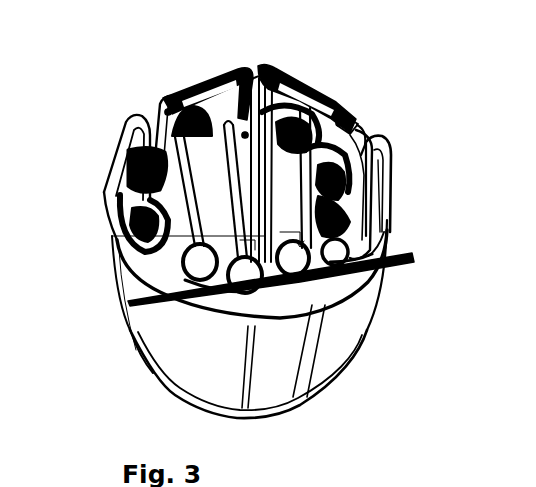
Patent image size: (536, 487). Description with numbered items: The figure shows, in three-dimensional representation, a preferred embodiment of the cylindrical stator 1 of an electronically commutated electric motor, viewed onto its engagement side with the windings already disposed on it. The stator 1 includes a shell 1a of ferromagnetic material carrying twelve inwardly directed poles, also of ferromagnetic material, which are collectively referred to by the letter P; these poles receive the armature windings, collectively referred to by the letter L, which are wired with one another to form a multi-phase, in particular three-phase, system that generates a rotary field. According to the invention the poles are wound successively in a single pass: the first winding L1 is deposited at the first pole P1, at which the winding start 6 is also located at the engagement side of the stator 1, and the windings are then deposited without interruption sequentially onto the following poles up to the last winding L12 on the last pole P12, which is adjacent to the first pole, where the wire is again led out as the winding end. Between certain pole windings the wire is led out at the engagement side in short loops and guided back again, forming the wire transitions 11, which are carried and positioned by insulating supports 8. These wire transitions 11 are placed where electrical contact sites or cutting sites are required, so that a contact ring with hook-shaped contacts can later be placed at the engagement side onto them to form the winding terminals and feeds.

The stator 1 is at (328, 343).
The shell 1a is at (325, 305).
The winding start 6 is at (390, 266).
The insulating supports 8 is at (160, 100).
The wire transitions 11 is at (190, 85).
The poles P is at (250, 100).
The windings L is at (362, 130).
The first pole P1 is at (112, 234).
The first winding L1 is at (238, 290).
The last pole P12 is at (386, 216).
The twelfth winding L12 is at (370, 256).